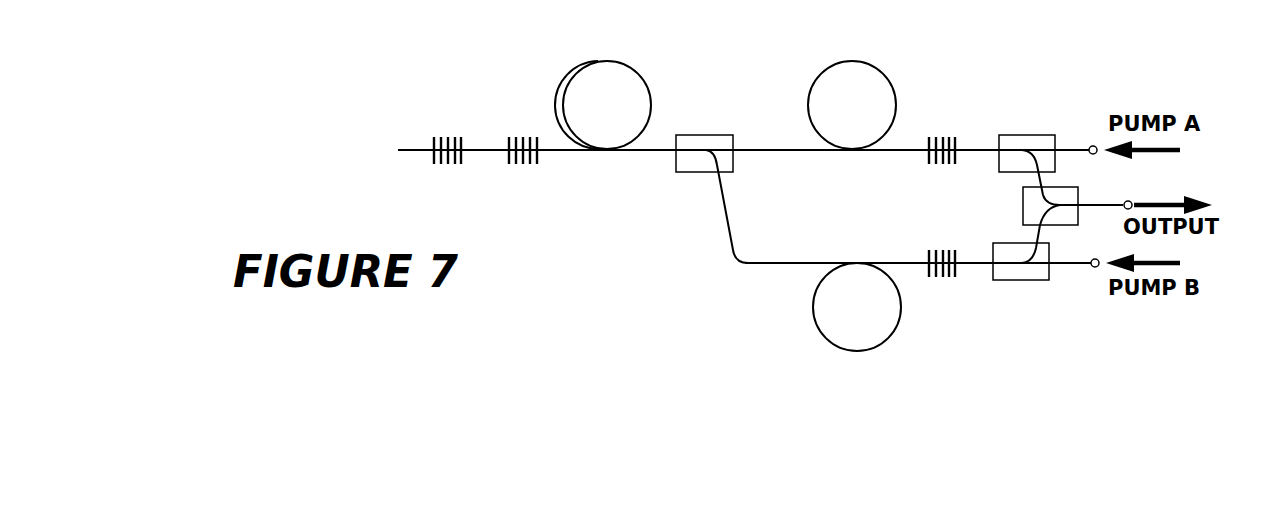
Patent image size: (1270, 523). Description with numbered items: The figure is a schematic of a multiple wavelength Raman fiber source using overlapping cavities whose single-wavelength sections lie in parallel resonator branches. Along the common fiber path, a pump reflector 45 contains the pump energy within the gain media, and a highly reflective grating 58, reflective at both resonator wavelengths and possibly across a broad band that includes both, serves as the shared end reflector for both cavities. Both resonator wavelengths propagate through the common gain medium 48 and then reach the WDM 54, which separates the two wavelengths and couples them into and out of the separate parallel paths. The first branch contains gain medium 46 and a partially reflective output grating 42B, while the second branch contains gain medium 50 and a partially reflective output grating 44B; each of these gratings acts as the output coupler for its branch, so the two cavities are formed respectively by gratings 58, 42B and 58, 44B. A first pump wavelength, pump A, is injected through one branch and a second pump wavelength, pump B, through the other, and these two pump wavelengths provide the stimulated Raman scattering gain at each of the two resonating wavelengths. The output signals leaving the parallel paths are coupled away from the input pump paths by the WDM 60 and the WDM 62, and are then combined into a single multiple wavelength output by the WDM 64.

The pump reflector 45 is at (450, 135).
The highly reflective grating 58 is at (518, 135).
The gain medium 48 is at (575, 64).
The WDM 54 is at (705, 130).
The gain medium 46 is at (838, 58).
The partially reflective output grating 42B is at (943, 130).
The WDM 60 is at (1022, 127).
The WDM 64 is at (1017, 207).
The WDM 62 is at (1033, 283).
The partially reflective output grating 44B is at (942, 287).
The gain medium 50 is at (873, 353).